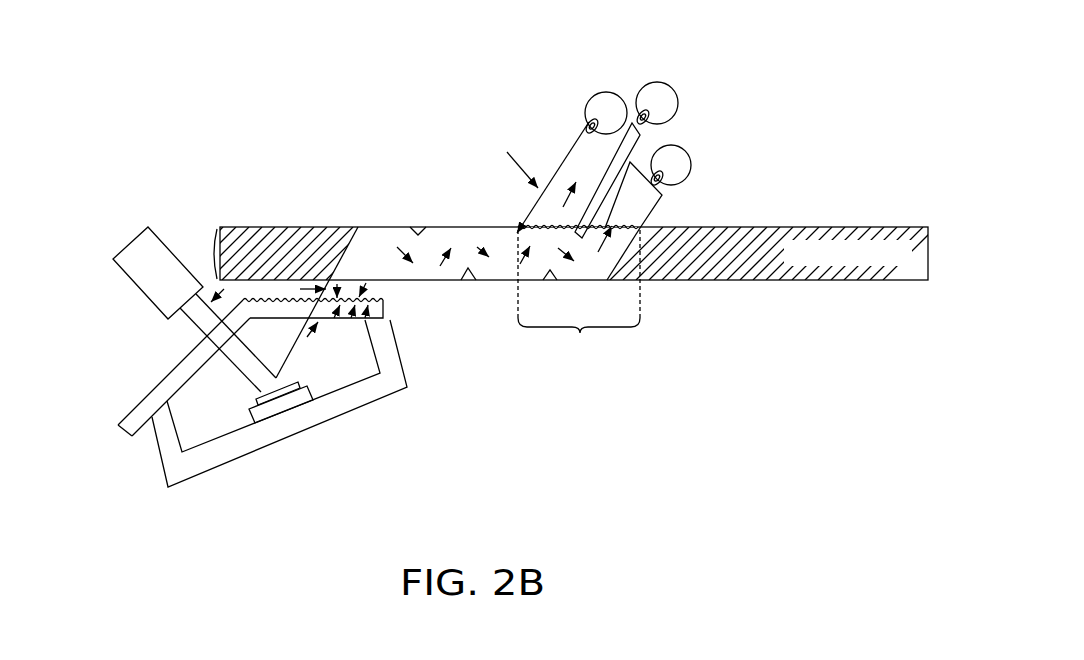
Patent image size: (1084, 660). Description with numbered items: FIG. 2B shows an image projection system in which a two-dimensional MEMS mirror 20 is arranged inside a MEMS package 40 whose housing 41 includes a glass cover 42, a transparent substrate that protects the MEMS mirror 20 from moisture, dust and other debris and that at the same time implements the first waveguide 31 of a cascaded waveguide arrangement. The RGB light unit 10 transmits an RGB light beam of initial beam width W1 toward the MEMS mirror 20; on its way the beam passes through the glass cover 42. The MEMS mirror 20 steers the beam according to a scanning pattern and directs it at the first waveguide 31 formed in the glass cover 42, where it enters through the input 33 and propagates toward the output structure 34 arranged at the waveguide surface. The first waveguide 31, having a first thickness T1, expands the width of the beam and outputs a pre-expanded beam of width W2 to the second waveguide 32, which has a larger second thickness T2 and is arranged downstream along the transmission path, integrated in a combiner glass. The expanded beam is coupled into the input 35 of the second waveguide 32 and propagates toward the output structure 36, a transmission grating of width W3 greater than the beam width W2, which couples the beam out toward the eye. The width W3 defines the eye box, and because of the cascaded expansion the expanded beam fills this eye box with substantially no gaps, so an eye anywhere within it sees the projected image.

The RGB light unit 10 is at (130, 243).
The MEMS mirror 20 is at (313, 392).
The first waveguide 31 is at (258, 300).
The second waveguide 32 is at (905, 227).
The input 33 is at (316, 336).
The output structure 34 is at (337, 292).
The input 35 is at (387, 311).
The output structure 36 is at (536, 221).
The MEMS package 40 is at (151, 459).
The housing 41 is at (243, 456).
The glass cover 42 is at (165, 390).
The first thickness T1 is at (110, 444).
The second thickness T2 is at (214, 240).
The initial beam width W1 is at (194, 322).
The beam width W2 is at (359, 289).
The width W3 is at (622, 265).